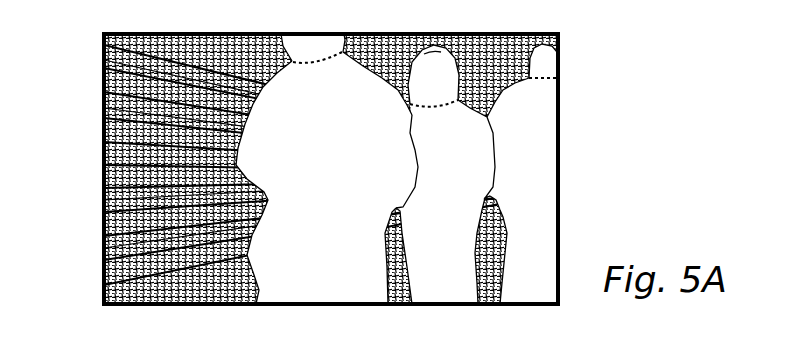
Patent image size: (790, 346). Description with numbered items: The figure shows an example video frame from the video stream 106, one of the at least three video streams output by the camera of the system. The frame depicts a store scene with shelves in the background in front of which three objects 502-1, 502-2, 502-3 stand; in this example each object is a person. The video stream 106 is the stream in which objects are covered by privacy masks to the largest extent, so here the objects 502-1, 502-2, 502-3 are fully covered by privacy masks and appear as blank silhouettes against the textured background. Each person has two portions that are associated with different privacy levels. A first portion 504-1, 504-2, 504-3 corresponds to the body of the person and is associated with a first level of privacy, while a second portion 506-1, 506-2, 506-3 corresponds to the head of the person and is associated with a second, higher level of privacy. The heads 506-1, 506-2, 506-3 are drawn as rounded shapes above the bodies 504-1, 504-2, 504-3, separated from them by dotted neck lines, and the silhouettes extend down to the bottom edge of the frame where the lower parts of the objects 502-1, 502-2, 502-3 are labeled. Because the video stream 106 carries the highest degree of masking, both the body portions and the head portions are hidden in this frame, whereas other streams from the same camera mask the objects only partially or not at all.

The video stream 106 is at (102, 120).
The object 502-1 is at (325, 281).
The object 502-2 is at (457, 279).
The object 502-3 is at (545, 279).
The first portion of the object 504-1 is at (327, 157).
The first portion of the object 504-2 is at (473, 173).
The first portion of the object 504-3 is at (543, 172).
The second portion of the object 506-1 is at (312, 46).
The second portion of the object 506-2 is at (445, 50).
The second portion of the object 506-3 is at (550, 65).